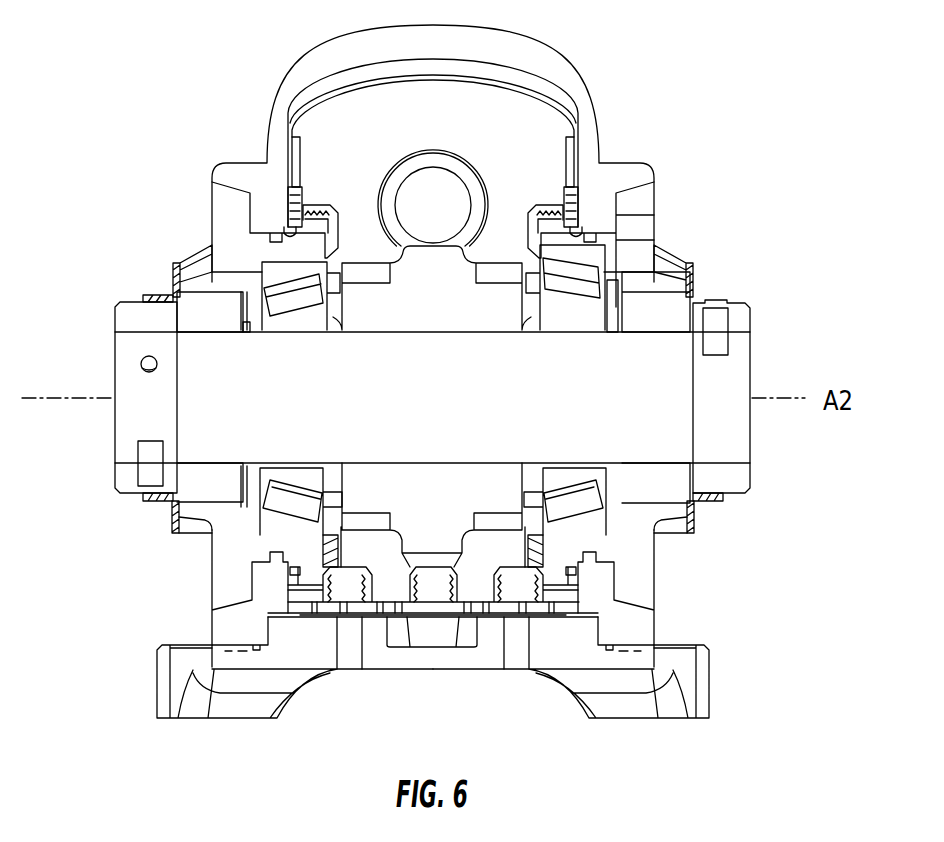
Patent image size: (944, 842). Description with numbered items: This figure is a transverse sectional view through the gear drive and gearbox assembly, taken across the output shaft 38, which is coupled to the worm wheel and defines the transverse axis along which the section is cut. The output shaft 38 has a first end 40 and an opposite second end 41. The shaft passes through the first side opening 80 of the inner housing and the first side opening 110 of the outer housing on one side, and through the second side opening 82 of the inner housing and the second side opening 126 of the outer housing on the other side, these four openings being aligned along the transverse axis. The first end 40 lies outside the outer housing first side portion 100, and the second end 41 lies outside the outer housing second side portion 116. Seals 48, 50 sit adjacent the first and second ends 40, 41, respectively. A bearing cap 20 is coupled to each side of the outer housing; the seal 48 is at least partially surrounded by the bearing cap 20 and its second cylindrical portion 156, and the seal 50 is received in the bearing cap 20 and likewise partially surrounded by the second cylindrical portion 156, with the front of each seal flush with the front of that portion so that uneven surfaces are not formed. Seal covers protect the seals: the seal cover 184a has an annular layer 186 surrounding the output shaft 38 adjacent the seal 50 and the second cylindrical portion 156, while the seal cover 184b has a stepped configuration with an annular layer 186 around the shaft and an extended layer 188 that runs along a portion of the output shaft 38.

The bearing cap 20 is at (220, 585).
The output shaft 38 is at (420, 412).
The first end 40 is at (127, 300).
The second end 41 is at (729, 299).
The seal 48 is at (205, 308).
The seal 50 is at (632, 307).
The first side opening 80 is at (290, 236).
The second side opening 82 is at (582, 237).
The first side portion 100 is at (195, 633).
The first side opening 110 is at (250, 333).
The second side portion 116 is at (672, 630).
The second side opening 126 is at (612, 332).
The second cylindrical portion 156 is at (193, 530).
The seal cover 184a is at (694, 520).
The seal cover 184b is at (171, 513).
The annular layer 186 is at (173, 267).
The extended layer 188 is at (150, 297).